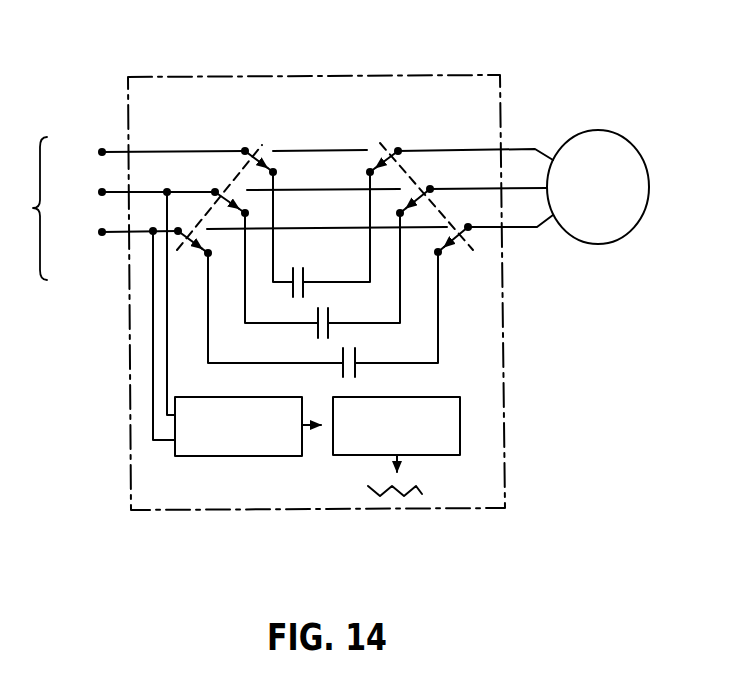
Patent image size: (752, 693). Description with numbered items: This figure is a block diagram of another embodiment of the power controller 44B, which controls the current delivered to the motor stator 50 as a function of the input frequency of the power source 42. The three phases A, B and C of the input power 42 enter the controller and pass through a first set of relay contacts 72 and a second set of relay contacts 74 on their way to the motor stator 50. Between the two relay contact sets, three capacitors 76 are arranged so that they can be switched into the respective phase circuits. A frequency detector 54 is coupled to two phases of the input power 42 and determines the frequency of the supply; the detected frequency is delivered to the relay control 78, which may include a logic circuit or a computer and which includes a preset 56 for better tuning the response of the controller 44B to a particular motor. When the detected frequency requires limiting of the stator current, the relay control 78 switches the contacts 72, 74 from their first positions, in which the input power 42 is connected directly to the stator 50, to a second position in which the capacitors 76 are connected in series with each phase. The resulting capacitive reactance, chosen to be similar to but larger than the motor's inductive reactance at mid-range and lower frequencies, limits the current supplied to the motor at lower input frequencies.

The power source 42 is at (125, 203).
The power controller 44B is at (500, 98).
The motor stator 50 is at (597, 244).
The frequency detector 54 is at (238, 456).
The preset 56 is at (405, 496).
The first set of relay contacts 72 is at (210, 137).
The second set of relay contacts 74 is at (422, 166).
The capacitors 76 is at (342, 357).
The relay control 78 is at (460, 422).